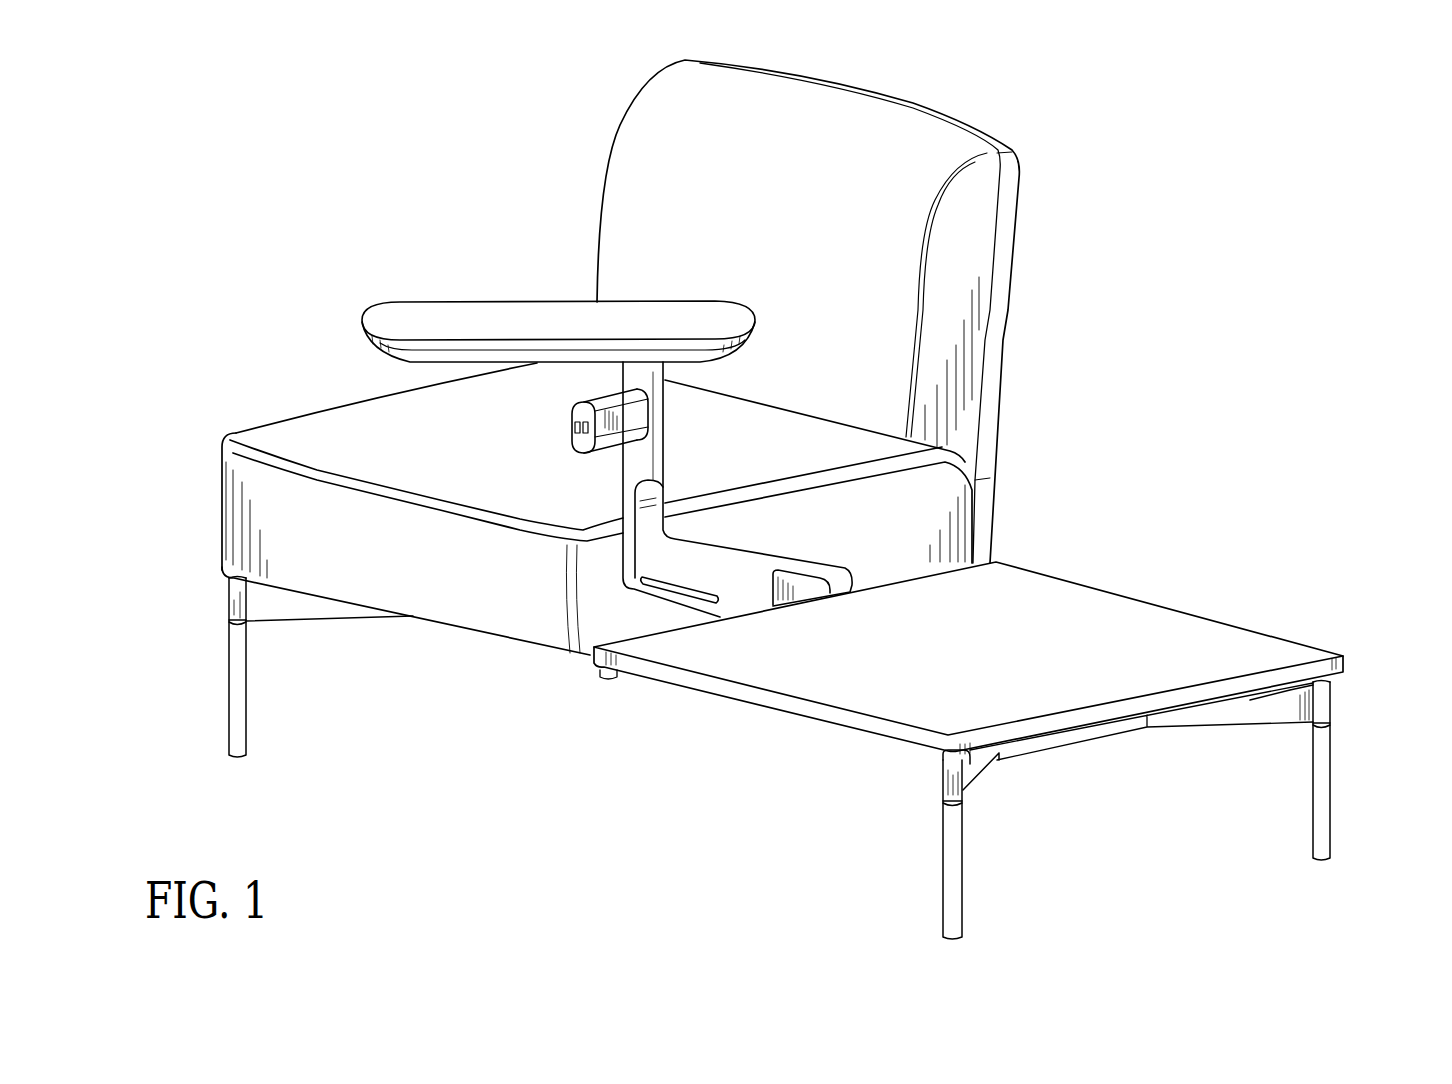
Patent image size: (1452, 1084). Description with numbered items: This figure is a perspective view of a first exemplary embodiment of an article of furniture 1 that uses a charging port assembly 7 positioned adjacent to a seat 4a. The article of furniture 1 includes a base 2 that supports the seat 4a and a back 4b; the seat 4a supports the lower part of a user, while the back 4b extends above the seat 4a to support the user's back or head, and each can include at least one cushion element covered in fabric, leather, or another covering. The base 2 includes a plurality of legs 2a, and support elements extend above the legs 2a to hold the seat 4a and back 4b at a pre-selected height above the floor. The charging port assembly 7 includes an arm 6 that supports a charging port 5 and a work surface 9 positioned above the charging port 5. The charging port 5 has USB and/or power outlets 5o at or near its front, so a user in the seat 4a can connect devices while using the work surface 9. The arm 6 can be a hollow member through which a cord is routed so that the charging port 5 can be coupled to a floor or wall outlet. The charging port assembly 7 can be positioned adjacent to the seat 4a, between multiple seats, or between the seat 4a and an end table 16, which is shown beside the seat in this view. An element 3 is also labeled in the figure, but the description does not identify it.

The article of furniture 1 is at (787, 499).
The base 2 is at (787, 499).
The legs 2a is at (953, 890).
The arm table assembly 3 is at (544, 421).
The seat 4a is at (318, 477).
The back 4b is at (942, 147).
The charging port 5 is at (554, 437).
The USB and/or power outlets 5o is at (573, 422).
The arm 6 is at (968, 659).
The charging port assembly 7 is at (556, 493).
The work surface 9 is at (532, 319).
The end table 16 is at (1138, 630).